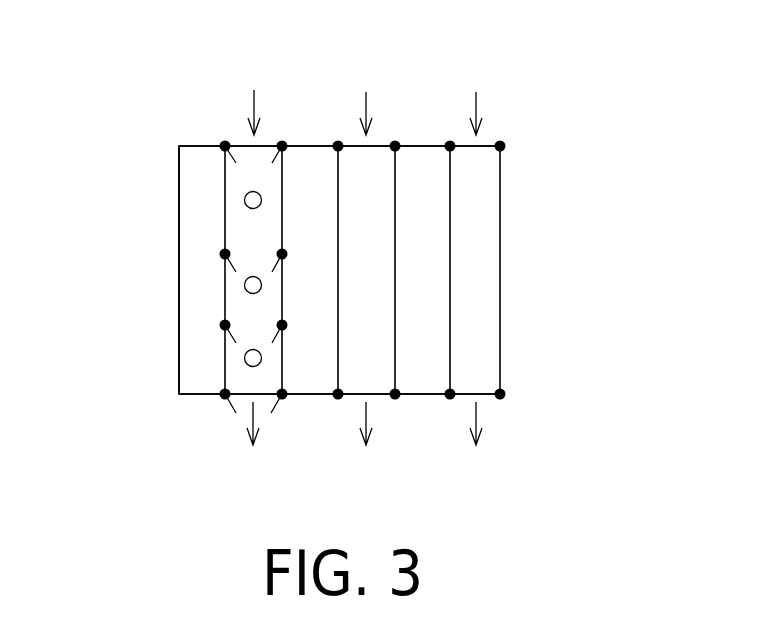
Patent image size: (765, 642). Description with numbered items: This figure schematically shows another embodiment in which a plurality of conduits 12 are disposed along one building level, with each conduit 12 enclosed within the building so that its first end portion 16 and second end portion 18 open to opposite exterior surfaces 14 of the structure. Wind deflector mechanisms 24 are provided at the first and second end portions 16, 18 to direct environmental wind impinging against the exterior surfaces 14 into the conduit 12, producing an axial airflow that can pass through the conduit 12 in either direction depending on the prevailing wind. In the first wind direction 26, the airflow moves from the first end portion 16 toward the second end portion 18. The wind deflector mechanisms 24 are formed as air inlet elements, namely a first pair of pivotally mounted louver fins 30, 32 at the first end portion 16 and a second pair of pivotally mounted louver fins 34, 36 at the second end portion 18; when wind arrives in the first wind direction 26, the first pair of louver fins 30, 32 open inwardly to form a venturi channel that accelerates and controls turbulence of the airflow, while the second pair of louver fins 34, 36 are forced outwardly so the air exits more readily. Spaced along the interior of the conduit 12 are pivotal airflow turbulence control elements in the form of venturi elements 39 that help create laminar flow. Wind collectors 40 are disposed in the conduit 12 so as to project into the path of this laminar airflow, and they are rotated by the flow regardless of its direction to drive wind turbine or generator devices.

The conduit 12 is at (214, 221).
The exterior surface 14 is at (203, 145).
The first end portion 16 is at (231, 128).
The second end portion 18 is at (271, 432).
The wind deflector mechanism 24 is at (386, 131).
The first wind direction 26 is at (253, 113).
The louver fin 30 is at (232, 152).
The louver fin 32 is at (275, 163).
The louver fin 34 is at (228, 399).
The louver fin 36 is at (274, 400).
The venturi element 39 is at (279, 248).
The wind collector 40 is at (243, 285).